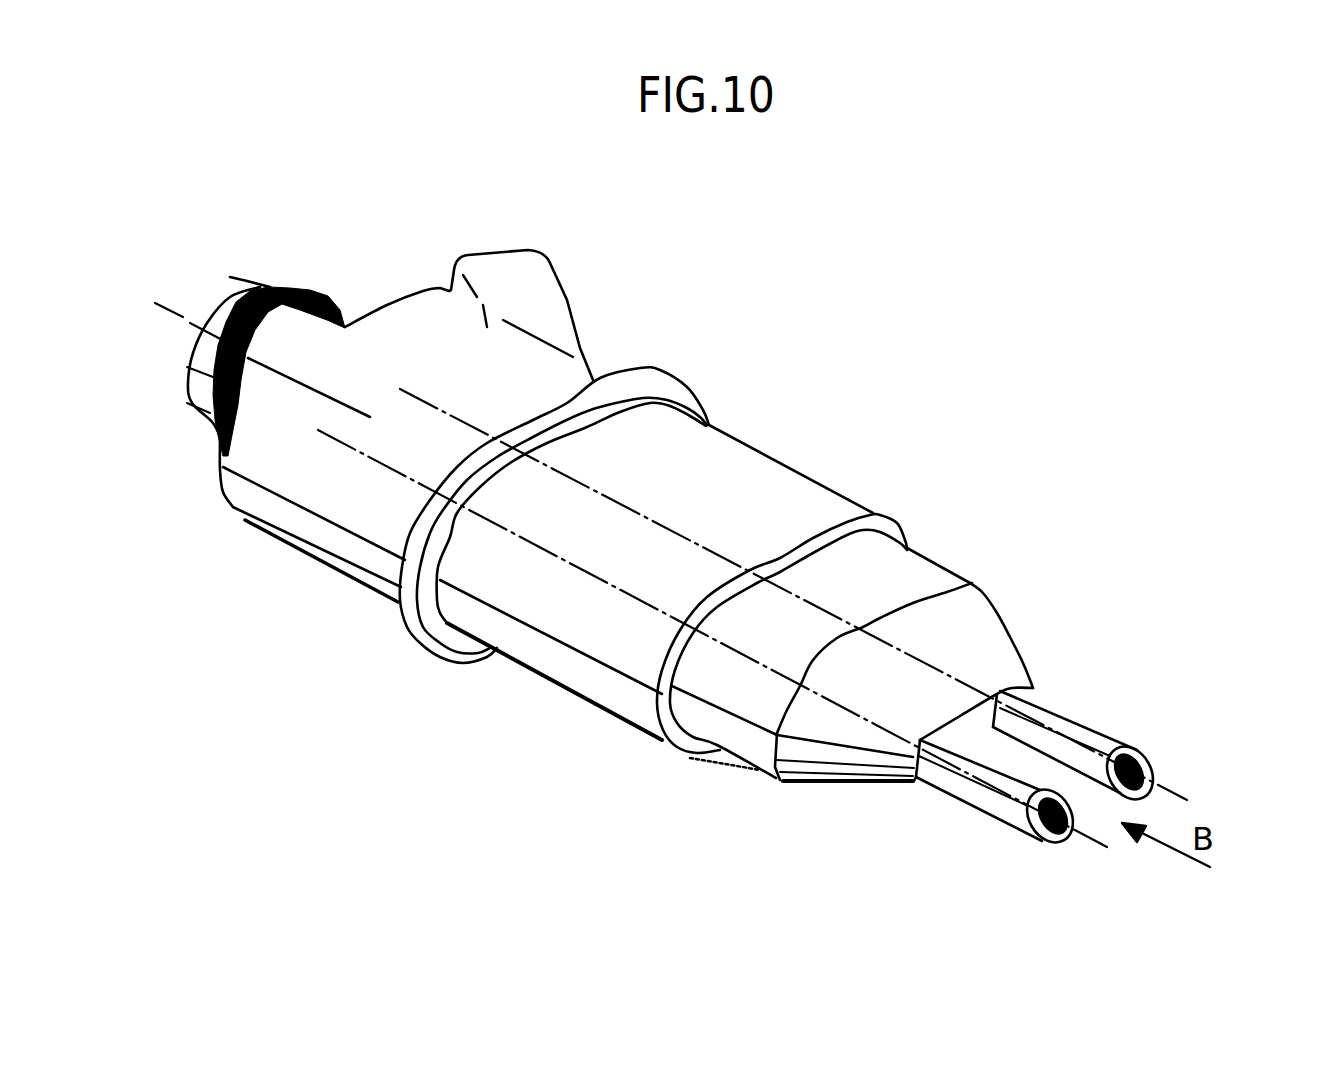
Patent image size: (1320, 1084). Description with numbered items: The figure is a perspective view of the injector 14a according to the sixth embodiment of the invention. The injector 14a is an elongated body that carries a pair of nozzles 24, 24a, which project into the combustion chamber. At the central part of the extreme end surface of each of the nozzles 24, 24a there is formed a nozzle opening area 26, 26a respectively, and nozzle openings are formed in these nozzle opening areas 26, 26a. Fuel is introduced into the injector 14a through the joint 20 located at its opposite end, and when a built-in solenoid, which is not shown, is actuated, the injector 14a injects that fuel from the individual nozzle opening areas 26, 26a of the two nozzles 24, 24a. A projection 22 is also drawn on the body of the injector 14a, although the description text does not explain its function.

The injector 14a is at (775, 507).
The joint 20 is at (227, 322).
The projection 22 is at (542, 292).
The nozzle 24 is at (997, 823).
The nozzle 24a is at (1113, 733).
The nozzle opening area 26 is at (1040, 833).
The nozzle opening area 26a is at (1153, 757).